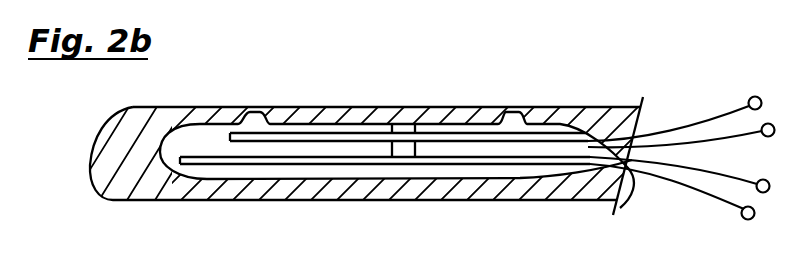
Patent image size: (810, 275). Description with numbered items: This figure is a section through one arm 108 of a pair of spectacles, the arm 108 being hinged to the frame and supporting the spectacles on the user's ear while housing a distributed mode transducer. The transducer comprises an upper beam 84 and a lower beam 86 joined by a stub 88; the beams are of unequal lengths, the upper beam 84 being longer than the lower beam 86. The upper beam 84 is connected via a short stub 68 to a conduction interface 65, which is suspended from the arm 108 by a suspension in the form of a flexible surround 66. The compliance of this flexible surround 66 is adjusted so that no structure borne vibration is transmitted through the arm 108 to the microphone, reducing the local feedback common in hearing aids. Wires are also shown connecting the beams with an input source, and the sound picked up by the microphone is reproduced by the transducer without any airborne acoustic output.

The conduction interface 65 is at (341, 107).
The flexible surround 66 is at (258, 112).
The short stub 68 is at (405, 130).
The upper beam 84 is at (288, 141).
The lower beam 86 is at (497, 165).
The stub 88 is at (407, 147).
The arm 108 is at (168, 200).